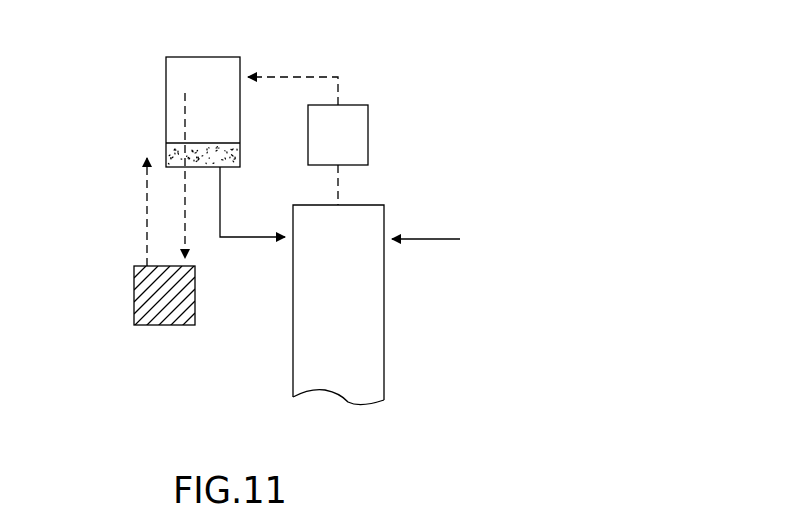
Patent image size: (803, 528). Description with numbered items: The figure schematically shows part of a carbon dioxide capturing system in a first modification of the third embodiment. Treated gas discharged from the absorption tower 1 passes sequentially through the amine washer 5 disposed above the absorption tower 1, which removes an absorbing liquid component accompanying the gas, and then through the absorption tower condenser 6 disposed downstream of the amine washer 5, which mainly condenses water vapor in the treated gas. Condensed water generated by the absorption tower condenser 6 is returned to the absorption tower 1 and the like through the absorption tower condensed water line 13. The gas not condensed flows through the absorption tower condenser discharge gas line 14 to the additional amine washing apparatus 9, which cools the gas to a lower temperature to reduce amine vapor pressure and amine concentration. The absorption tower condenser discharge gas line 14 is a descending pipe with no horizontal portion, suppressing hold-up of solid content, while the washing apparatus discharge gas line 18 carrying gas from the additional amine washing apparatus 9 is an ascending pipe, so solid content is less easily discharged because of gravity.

The absorption tower 1 is at (384, 218).
The amine washer 5 is at (368, 122).
The absorption tower condenser 6 is at (166, 70).
The additional amine washing apparatus 9 is at (134, 295).
The absorption tower condensed water line 13 is at (258, 238).
The absorption tower condenser discharge gas line 14 is at (185, 200).
The washing apparatus discharge gas line 18 is at (147, 234).